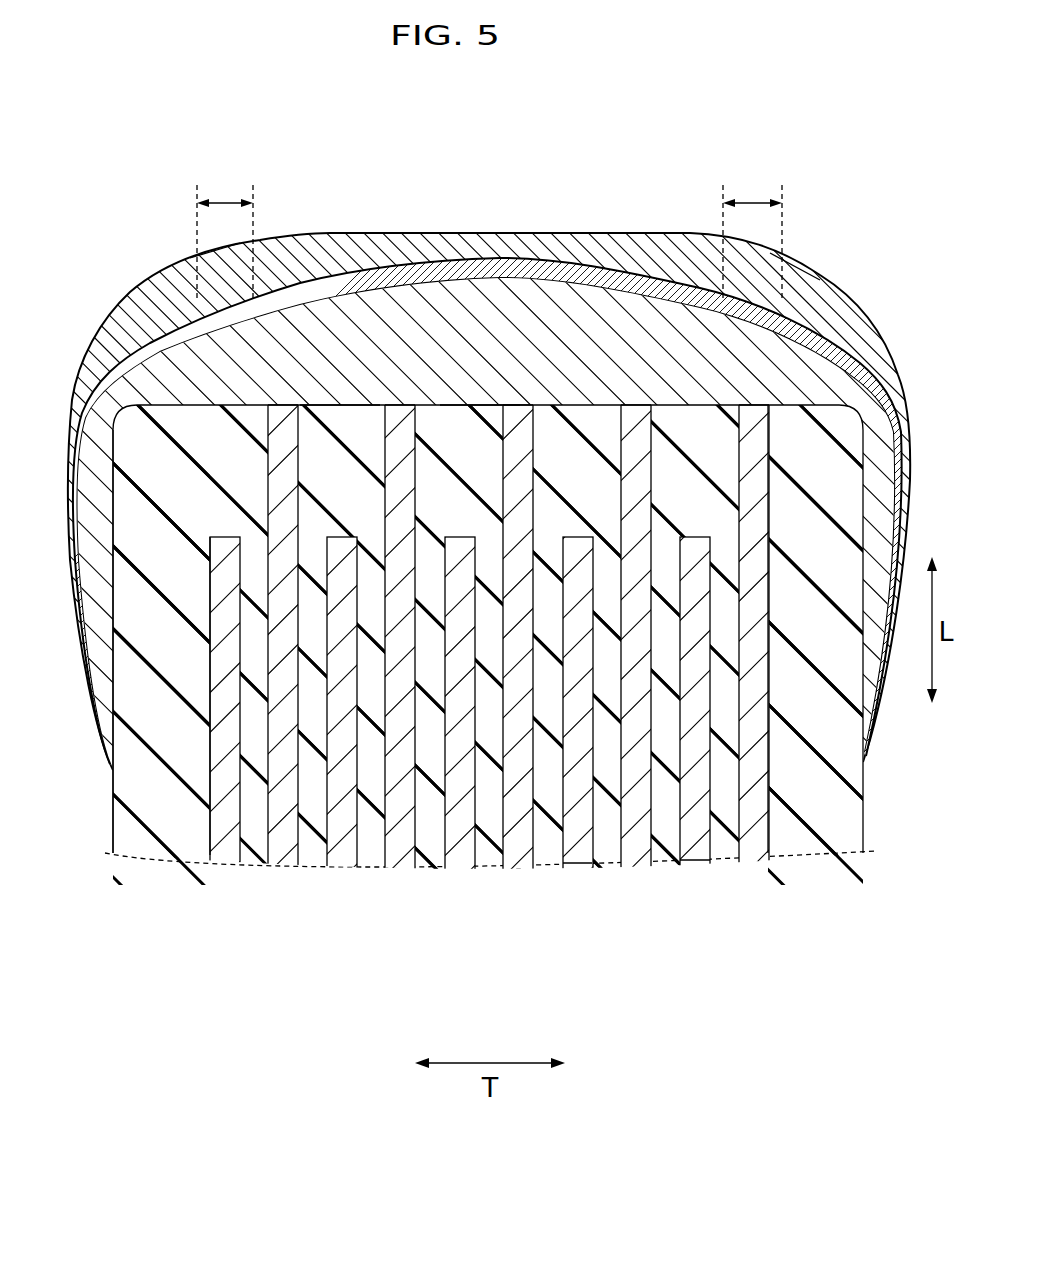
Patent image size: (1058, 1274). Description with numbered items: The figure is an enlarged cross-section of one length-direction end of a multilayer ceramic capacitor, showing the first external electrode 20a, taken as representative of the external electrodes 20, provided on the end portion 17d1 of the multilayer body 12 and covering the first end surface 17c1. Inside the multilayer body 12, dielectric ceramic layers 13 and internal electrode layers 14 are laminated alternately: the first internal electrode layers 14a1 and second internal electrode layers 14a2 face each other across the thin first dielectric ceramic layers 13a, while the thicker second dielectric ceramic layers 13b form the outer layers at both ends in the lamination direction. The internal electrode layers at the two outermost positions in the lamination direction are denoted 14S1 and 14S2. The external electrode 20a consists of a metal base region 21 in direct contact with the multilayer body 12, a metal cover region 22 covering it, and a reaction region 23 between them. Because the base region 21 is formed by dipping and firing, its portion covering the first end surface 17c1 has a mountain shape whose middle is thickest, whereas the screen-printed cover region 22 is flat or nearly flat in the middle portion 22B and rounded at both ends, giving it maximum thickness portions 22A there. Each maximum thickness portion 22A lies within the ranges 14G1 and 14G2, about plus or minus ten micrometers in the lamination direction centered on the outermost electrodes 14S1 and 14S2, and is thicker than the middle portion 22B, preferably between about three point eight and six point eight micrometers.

The multilayer body 12 is at (99, 831).
The dielectric ceramic layer 13 is at (529, 637).
The first dielectric ceramic layer 13a is at (315, 838).
The second dielectric ceramic layer 13b is at (170, 830).
The internal electrode layer 14 is at (489, 637).
The first internal electrode layer 14a1 is at (393, 477).
The second internal electrode layer 14a2 is at (575, 842).
The outermost internal electrode layer 14S1 is at (755, 485).
The outermost internal electrode layer 14S2 is at (220, 583).
The range 14G1 is at (753, 200).
The range 14G2 is at (223, 197).
The first end surface 17c1 is at (478, 405).
The end portion in the vicinity of the first end surface 17d1 is at (342, 428).
The external electrode 20 is at (529, 637).
The first external electrode 20a is at (529, 637).
The base region 21 is at (655, 323).
The cover region 22 is at (613, 240).
The maximum thickness portion 22A is at (223, 267).
The middle portion 22B is at (473, 237).
The reaction region 23 is at (637, 257).